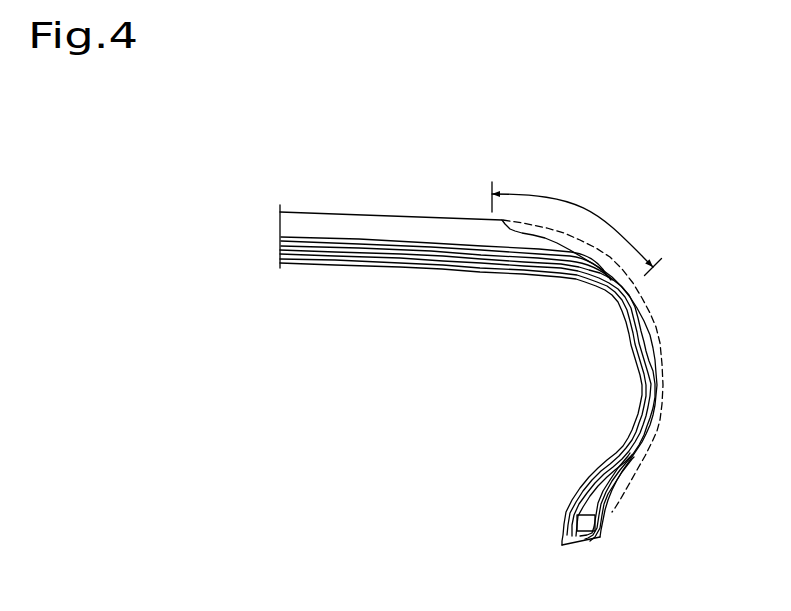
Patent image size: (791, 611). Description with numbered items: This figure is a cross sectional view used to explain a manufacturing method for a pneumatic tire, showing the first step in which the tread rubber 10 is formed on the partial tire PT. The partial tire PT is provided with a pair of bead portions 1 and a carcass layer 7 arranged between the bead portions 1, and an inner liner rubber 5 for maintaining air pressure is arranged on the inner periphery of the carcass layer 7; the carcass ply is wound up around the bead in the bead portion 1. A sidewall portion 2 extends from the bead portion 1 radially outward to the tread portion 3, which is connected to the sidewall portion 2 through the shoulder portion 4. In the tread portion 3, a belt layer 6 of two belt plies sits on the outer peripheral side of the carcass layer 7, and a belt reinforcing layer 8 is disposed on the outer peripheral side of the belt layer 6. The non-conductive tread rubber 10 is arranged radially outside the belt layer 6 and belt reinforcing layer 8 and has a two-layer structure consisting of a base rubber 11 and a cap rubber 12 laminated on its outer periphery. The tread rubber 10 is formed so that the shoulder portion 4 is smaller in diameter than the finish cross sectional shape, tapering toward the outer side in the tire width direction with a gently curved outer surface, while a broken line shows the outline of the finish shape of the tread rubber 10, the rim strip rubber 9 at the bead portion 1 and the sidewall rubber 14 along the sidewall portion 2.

The bead portion 1 is at (612, 533).
The sidewall portion 2 is at (683, 348).
The tread portion 3 is at (290, 185).
The shoulder portion 4 is at (577, 229).
The inner liner rubber 5 is at (440, 270).
The belt layer 6 is at (480, 268).
The carcass layer 7 is at (610, 307).
The belt reinforcing layer 8 is at (555, 262).
The rim strip rubber 9 is at (612, 510).
The tread rubber 10 is at (330, 155).
The base rubber 11 is at (350, 237).
The cap rubber 12 is at (412, 218).
The sidewall rubber 14 is at (663, 403).
The partial tire PT is at (518, 492).